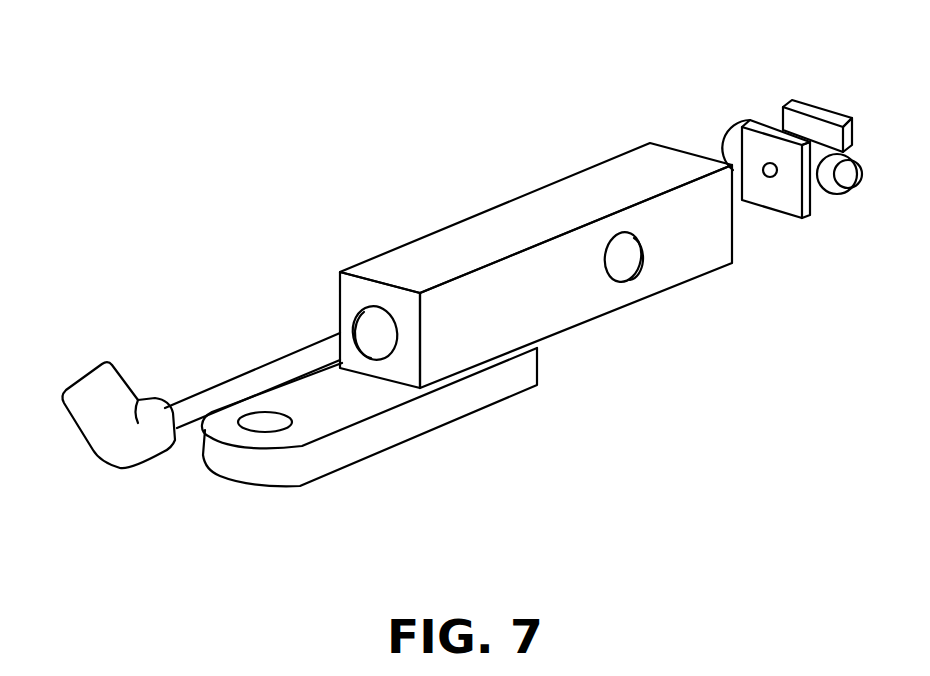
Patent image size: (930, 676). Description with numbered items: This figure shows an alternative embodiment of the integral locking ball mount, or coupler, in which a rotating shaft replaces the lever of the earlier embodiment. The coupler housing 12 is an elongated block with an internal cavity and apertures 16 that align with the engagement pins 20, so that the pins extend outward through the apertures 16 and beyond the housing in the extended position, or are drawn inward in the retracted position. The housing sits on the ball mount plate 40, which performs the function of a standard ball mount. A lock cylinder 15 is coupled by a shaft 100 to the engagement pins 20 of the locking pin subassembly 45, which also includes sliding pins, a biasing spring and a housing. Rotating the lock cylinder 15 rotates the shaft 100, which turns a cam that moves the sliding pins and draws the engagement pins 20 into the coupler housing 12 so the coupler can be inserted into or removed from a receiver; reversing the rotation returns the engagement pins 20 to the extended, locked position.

The coupler housing 12 is at (508, 200).
The apertures 16 is at (627, 262).
The shaft 100 is at (245, 385).
The lock cylinder 15 is at (93, 380).
The ball mount plate 40 is at (258, 468).
The locking pin subassembly 45 is at (815, 107).
The engagement pins 20 is at (853, 178).